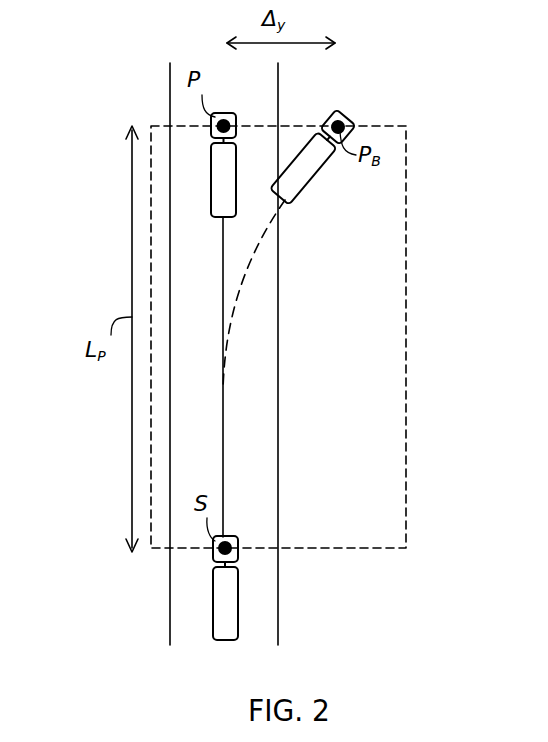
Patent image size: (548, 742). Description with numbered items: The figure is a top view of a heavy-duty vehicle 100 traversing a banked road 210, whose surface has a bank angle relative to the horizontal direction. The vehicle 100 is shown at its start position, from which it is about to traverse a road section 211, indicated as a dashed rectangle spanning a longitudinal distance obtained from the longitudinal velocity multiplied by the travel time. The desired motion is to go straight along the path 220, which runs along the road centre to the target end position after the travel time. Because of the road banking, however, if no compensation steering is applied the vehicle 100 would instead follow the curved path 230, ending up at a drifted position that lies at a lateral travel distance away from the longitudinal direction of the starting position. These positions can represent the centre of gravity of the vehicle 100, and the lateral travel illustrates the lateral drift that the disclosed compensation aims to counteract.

The heavy-duty vehicle 100 is at (211, 215).
The banked road 210 is at (169, 597).
The road section 211 is at (407, 432).
The path 220 is at (222, 268).
The path 230 is at (252, 258).